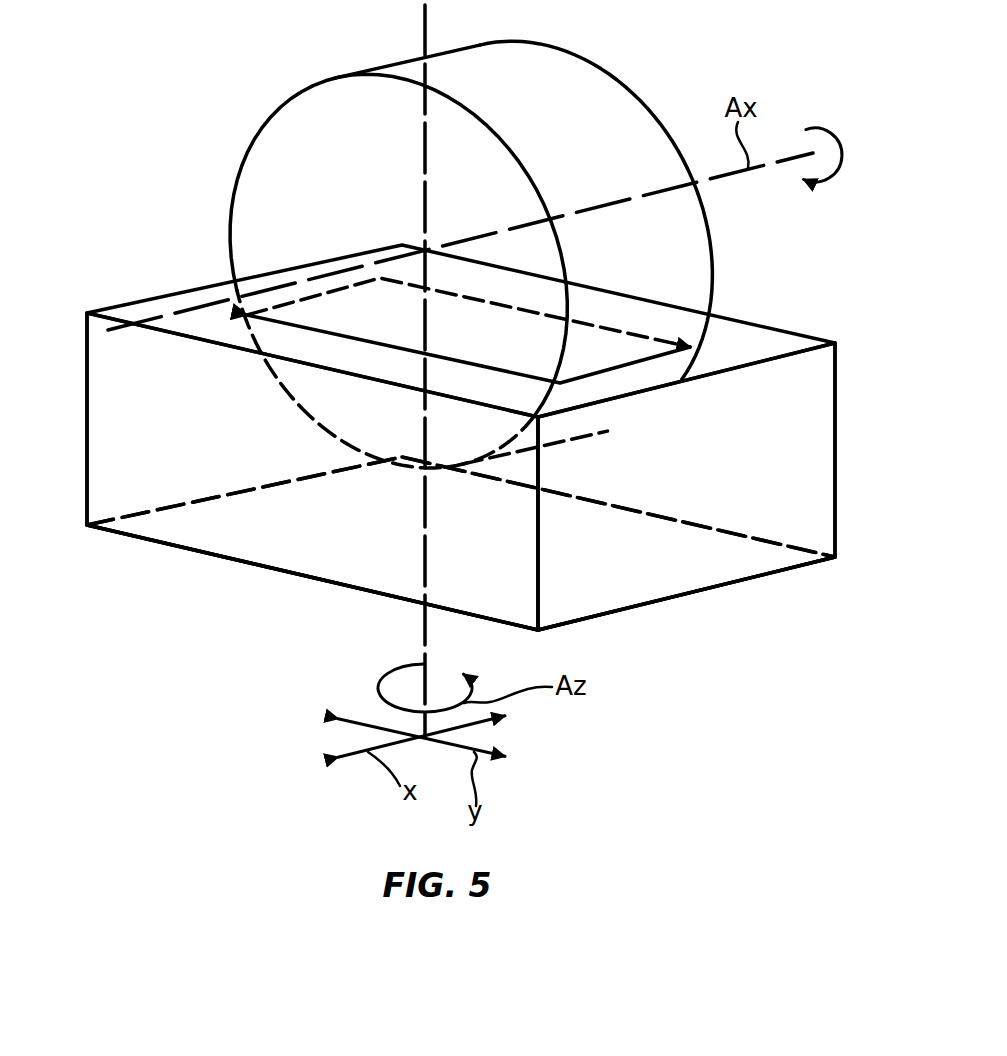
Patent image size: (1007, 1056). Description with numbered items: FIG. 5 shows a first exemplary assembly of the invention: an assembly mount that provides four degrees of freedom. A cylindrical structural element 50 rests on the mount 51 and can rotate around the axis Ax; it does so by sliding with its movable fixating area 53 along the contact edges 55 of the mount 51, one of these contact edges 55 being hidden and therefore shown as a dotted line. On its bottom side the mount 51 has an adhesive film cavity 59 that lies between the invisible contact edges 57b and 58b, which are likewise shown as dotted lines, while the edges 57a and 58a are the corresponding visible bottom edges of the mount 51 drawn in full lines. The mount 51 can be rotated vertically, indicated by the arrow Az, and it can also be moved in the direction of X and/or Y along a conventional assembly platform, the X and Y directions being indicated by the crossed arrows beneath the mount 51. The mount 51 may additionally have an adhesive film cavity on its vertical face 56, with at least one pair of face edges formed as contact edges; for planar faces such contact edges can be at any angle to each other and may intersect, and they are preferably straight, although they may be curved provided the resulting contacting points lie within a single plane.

The cylindrical structural element 50 is at (372, 72).
The mount 51 is at (836, 440).
The movable fixating area 53 is at (670, 243).
The contact edges 55 is at (303, 299).
The vertical face 56 is at (612, 585).
The bottom edge 57a is at (760, 578).
The contact edge 57b is at (187, 503).
The front bottom edge 58a is at (297, 578).
The contact edge 58b is at (772, 540).
The adhesive film cavity 59 is at (222, 528).